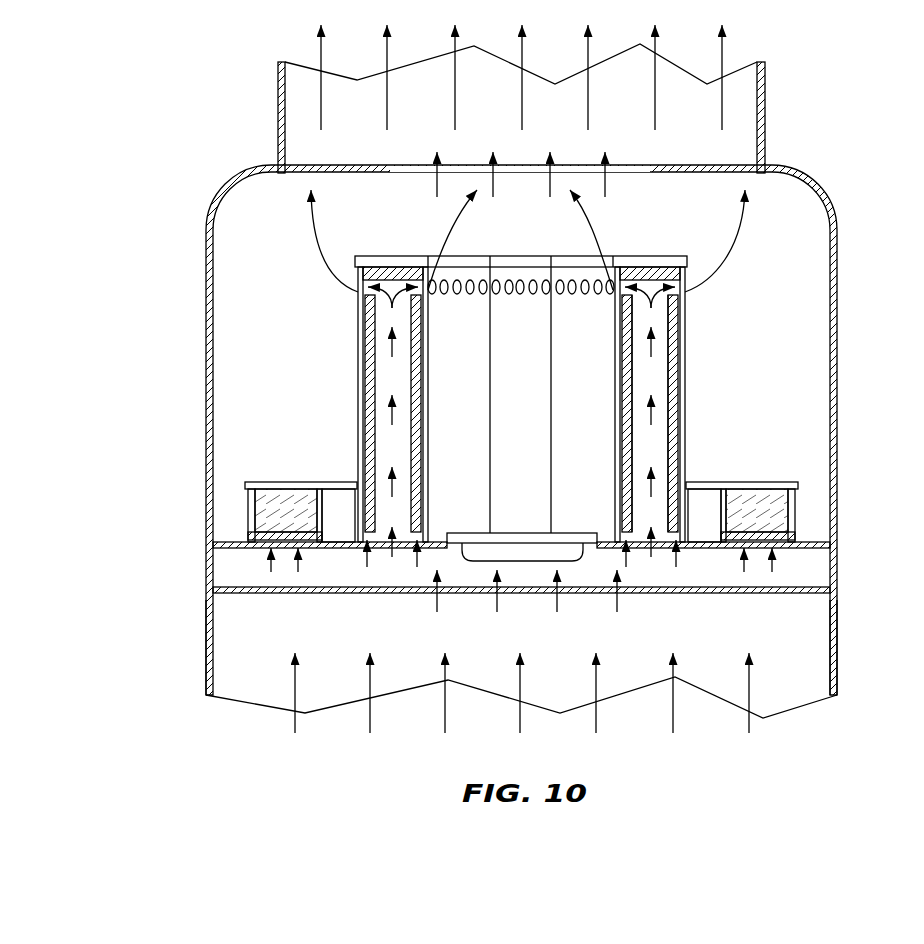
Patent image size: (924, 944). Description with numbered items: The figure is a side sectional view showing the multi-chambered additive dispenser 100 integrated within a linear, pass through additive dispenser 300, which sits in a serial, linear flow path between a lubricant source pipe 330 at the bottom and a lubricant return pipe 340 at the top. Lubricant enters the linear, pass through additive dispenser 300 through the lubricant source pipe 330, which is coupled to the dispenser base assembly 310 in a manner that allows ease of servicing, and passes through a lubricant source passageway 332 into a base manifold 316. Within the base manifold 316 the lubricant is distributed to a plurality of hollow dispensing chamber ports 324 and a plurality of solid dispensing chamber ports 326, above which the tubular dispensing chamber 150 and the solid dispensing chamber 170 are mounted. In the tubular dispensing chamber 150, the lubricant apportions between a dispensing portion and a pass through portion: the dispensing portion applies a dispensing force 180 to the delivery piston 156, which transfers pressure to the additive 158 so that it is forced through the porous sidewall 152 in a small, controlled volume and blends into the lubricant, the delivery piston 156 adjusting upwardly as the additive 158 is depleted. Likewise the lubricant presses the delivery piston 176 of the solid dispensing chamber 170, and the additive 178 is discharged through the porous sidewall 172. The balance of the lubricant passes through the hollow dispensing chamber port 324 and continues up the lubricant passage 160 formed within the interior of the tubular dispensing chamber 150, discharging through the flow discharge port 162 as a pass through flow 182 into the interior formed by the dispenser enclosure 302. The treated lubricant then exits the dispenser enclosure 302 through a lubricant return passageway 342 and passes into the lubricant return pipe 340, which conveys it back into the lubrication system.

The linear, pass through additive dispenser 300 is at (508, 379).
The dispenser enclosure 302 is at (565, 423).
The lubricant return pipe 340 is at (765, 113).
The lubricant return passageway 342 is at (624, 184).
The multi-chambered additive dispenser 100 is at (475, 381).
The tubular dispensing chamber 150 is at (356, 398).
The porous sidewall 152 is at (686, 398).
The additive 158 is at (673, 427).
The lubricant passage 160 is at (663, 350).
The flow discharge port 162 is at (686, 289).
The delivery piston 156 is at (704, 500).
The solid dispensing chamber 170 is at (254, 490).
The porous sidewall 172 is at (248, 503).
The additive 178 is at (258, 520).
The delivery piston 176 is at (253, 545).
The dispenser base assembly 310 is at (508, 630).
The base manifold 316 is at (822, 570).
The dispensing force 180 is at (368, 562).
The pass through flow 182 is at (650, 560).
The solid dispensing chamber port 326 is at (282, 554).
The hollow dispensing chamber port 324 is at (401, 556).
The lubricant source passageway 332 is at (633, 597).
The lubricant source pipe 330 is at (838, 645).